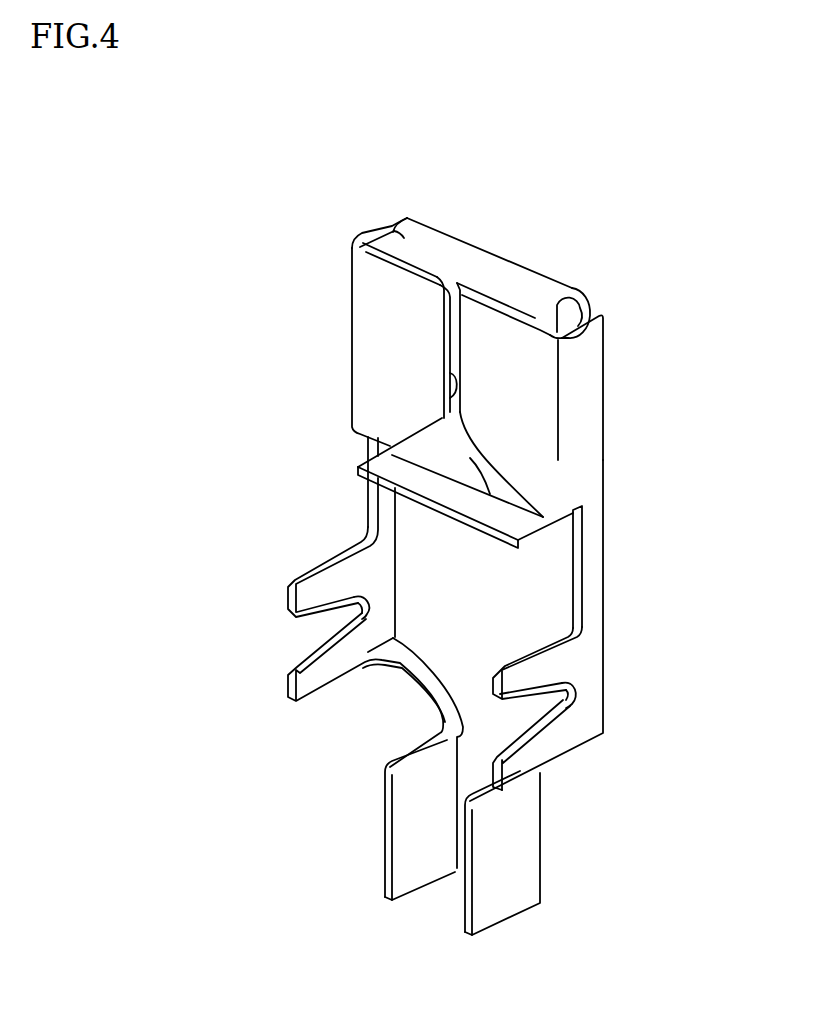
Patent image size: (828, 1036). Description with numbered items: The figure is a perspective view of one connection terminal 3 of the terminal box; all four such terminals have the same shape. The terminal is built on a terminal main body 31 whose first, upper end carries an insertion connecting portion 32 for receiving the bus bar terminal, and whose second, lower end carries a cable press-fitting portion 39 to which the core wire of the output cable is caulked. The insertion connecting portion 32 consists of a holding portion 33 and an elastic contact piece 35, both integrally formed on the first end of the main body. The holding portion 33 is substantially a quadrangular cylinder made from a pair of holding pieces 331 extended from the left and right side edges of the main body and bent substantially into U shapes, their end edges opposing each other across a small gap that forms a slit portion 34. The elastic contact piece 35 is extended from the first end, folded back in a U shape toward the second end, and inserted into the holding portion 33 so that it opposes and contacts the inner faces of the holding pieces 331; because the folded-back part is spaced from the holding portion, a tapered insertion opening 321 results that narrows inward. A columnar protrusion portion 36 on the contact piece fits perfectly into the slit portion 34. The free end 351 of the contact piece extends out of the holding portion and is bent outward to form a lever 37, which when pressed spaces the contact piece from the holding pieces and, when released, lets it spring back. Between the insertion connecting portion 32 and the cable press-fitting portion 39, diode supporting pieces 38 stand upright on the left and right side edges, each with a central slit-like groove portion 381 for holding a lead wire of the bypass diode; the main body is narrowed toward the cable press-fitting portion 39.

The connection terminal 3 is at (316, 257).
The terminal main body 31 is at (592, 580).
The insertion connecting portion 32 is at (370, 225).
The tapered insertion opening 321 is at (481, 283).
The holding portion 33 is at (587, 368).
The holding pieces 331 is at (413, 412).
The slit portion 34 is at (450, 314).
The elastic contact piece 35 is at (548, 533).
The free end 351 is at (393, 479).
The protrusion portion 36 is at (450, 383).
The lever 37 is at (375, 484).
The diode supporting pieces 38 is at (320, 680).
The groove portions 381 is at (320, 633).
The cable press-fitting portion 39 is at (546, 870).